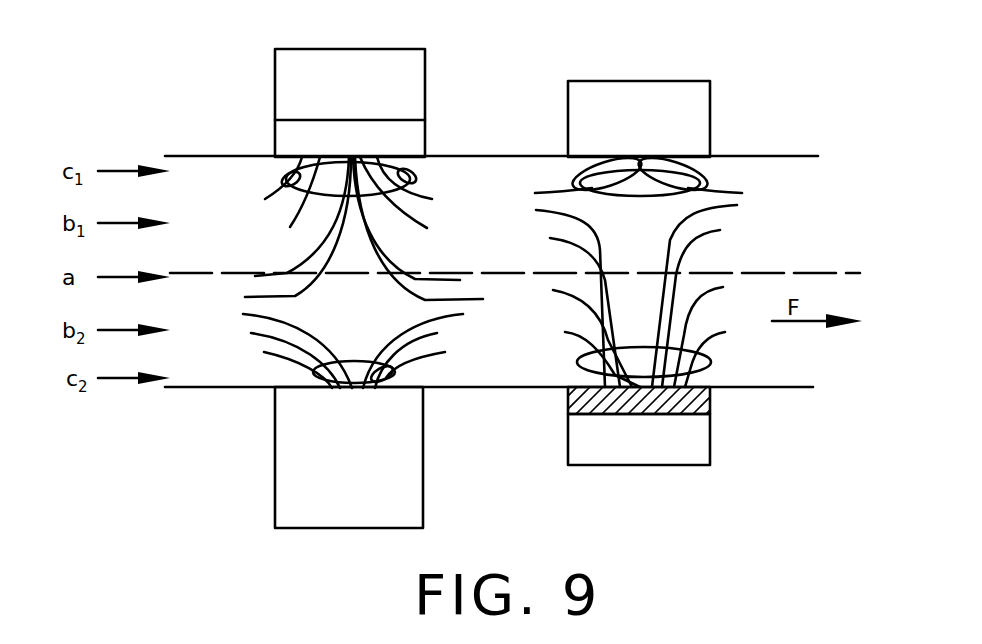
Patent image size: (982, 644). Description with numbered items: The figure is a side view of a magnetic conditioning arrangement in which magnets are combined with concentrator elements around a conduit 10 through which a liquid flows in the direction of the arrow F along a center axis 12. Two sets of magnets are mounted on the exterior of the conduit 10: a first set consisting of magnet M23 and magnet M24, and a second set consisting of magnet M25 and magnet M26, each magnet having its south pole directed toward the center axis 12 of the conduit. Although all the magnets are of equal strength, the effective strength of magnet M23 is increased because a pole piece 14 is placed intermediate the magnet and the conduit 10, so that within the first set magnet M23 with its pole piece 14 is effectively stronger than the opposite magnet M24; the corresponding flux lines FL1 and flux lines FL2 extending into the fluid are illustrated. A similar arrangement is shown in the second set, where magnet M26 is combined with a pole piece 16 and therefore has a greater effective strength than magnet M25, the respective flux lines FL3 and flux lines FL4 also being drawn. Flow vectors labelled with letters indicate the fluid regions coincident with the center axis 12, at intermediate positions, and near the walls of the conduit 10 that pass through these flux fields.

The conduit 10 is at (805, 155).
The center axis 12 is at (756, 273).
The pole piece 14 is at (275, 131).
The pole piece 16 is at (712, 397).
The magnet M23 is at (426, 56).
The magnet M24 is at (423, 485).
The magnet M25 is at (710, 92).
The magnet M26 is at (712, 447).
The flux lines FL1 is at (405, 178).
The flux lines FL2 is at (316, 373).
The flux lines FL3 is at (578, 358).
The flux lines FL4 is at (712, 177).